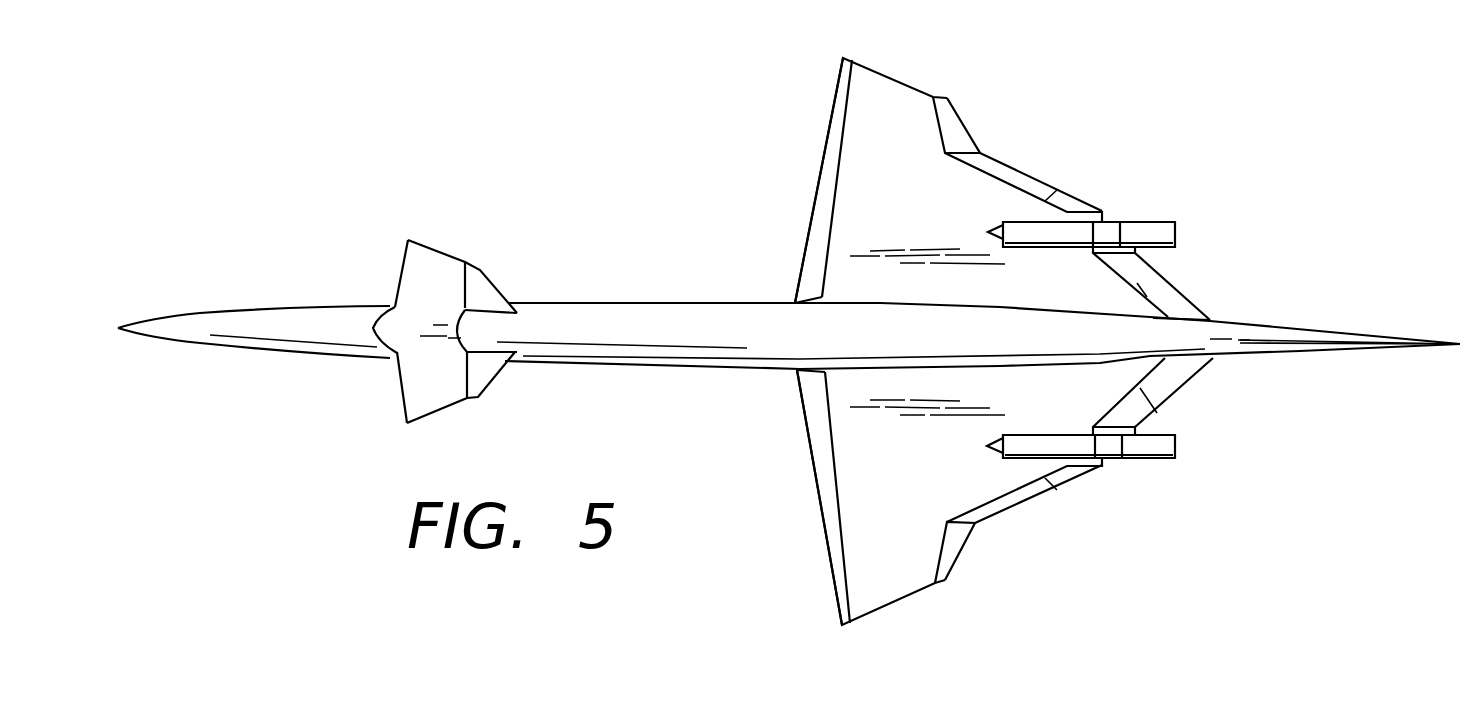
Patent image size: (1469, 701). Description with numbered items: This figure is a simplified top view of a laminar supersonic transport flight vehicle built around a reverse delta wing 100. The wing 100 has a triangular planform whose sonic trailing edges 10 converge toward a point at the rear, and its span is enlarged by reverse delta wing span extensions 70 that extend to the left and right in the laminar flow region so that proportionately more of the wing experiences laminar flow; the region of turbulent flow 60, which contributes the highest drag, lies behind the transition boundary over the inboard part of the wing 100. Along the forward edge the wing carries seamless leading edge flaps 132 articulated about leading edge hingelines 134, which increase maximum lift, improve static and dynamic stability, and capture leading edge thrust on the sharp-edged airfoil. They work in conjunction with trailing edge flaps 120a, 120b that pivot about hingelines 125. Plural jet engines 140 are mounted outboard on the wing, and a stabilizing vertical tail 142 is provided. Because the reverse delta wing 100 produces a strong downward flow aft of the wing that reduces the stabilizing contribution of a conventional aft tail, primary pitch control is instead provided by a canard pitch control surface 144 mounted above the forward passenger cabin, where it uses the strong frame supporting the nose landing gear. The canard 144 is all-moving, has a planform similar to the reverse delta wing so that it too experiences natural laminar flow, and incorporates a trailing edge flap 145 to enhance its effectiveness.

The reverse delta wing 100 is at (818, 120).
The region of turbulent flow 60 is at (1082, 297).
The reverse delta wing span extensions 70 is at (828, 341).
The trailing edges 10 is at (1098, 344).
The trailing edge flap 120a is at (1187, 303).
The trailing edge flap 120b is at (962, 142).
The hingelines 125 is at (930, 103).
The leading edge flaps 132 is at (815, 237).
The leading edge hingelines 134 is at (837, 175).
The engines 140 is at (1163, 225).
The stabilizing vertical tail 142 is at (1378, 338).
The canard pitch control surface 144 is at (422, 260).
The trailing edge flap 145 is at (478, 290).